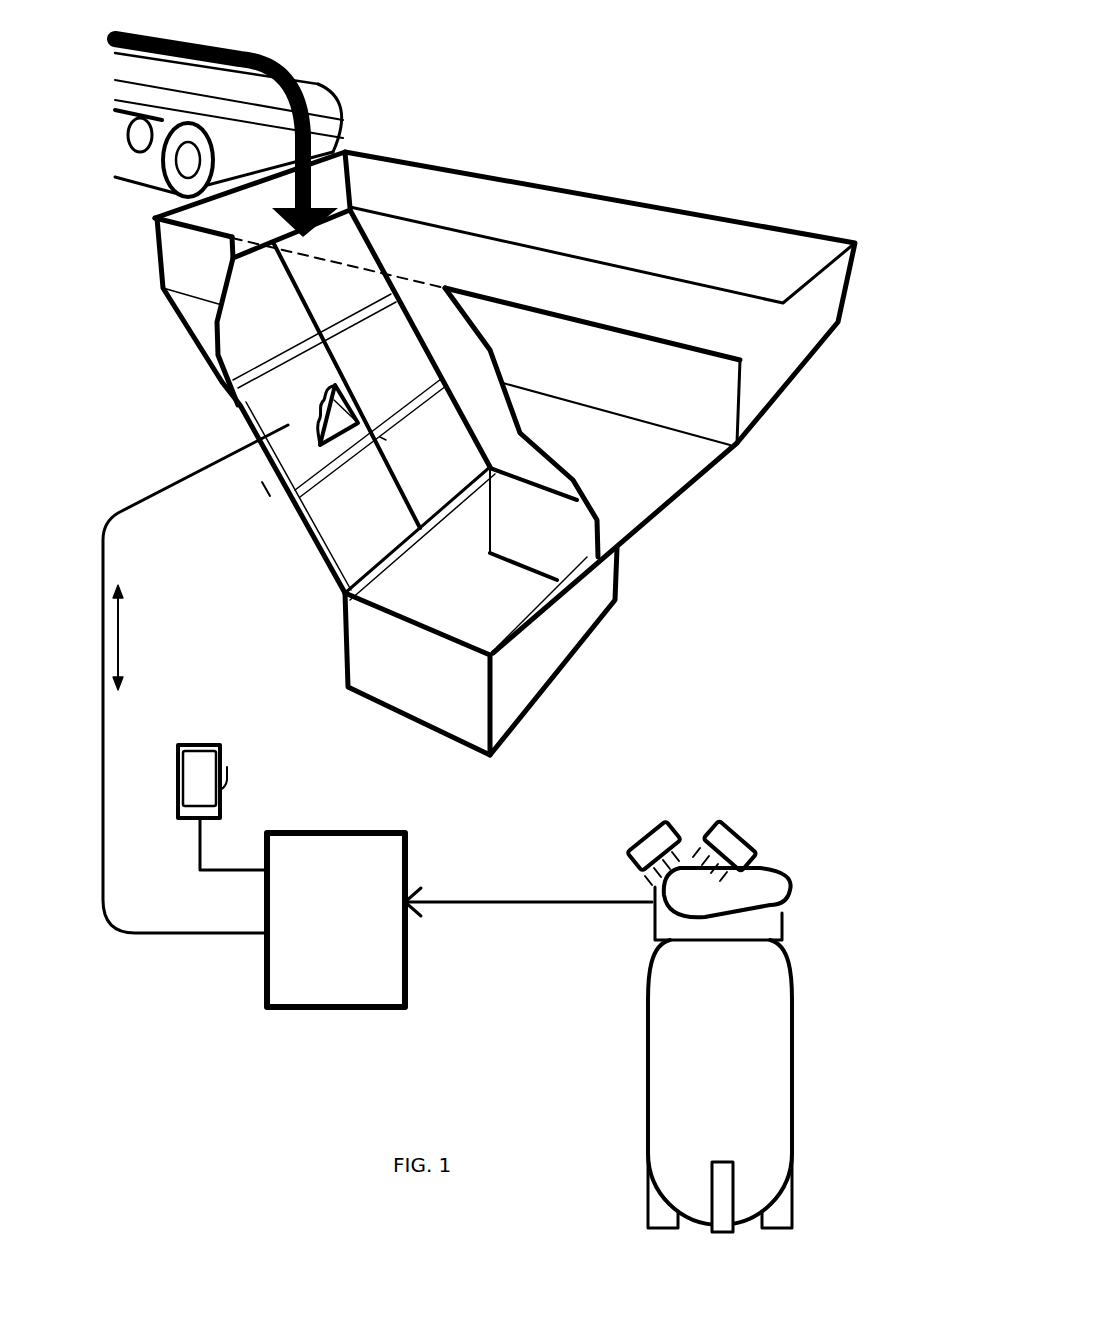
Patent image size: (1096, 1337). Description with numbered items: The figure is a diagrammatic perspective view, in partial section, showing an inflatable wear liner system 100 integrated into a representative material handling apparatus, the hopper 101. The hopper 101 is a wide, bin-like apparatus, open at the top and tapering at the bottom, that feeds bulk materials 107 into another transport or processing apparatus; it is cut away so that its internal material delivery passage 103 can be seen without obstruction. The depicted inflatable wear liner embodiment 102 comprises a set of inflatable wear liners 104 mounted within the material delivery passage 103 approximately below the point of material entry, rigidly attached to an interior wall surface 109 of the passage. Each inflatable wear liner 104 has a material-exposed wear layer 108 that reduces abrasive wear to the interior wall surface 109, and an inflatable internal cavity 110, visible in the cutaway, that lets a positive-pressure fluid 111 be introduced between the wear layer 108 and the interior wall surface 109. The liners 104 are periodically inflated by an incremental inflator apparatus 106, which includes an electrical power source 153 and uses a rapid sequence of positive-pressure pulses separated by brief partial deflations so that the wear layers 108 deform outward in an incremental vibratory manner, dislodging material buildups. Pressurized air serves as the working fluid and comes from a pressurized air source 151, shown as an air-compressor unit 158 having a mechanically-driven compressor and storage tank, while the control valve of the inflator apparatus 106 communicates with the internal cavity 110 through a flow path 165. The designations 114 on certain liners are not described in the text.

The inflatable wear liner system 100 is at (690, 99).
The hopper 101 is at (675, 480).
The inflatable wear liner embodiment 102 is at (654, 175).
The internal material delivery passage 103 is at (635, 305).
The inflatable wear liners 104 is at (360, 256).
The incremental inflator apparatus 106 is at (405, 845).
The bulk materials 107 is at (282, 63).
The material-exposed wear layer 108 is at (333, 386).
The interior wall surface 109 is at (272, 483).
The inflatable internal cavity 110 is at (360, 398).
The positive-pressure fluid 111 is at (124, 632).
The designated compartments 114 is at (382, 516).
The pressurized air source 151 is at (630, 992).
The electrical power source 153 is at (221, 748).
The air-compressor unit 158 is at (738, 830).
The flow path 165 is at (103, 738).